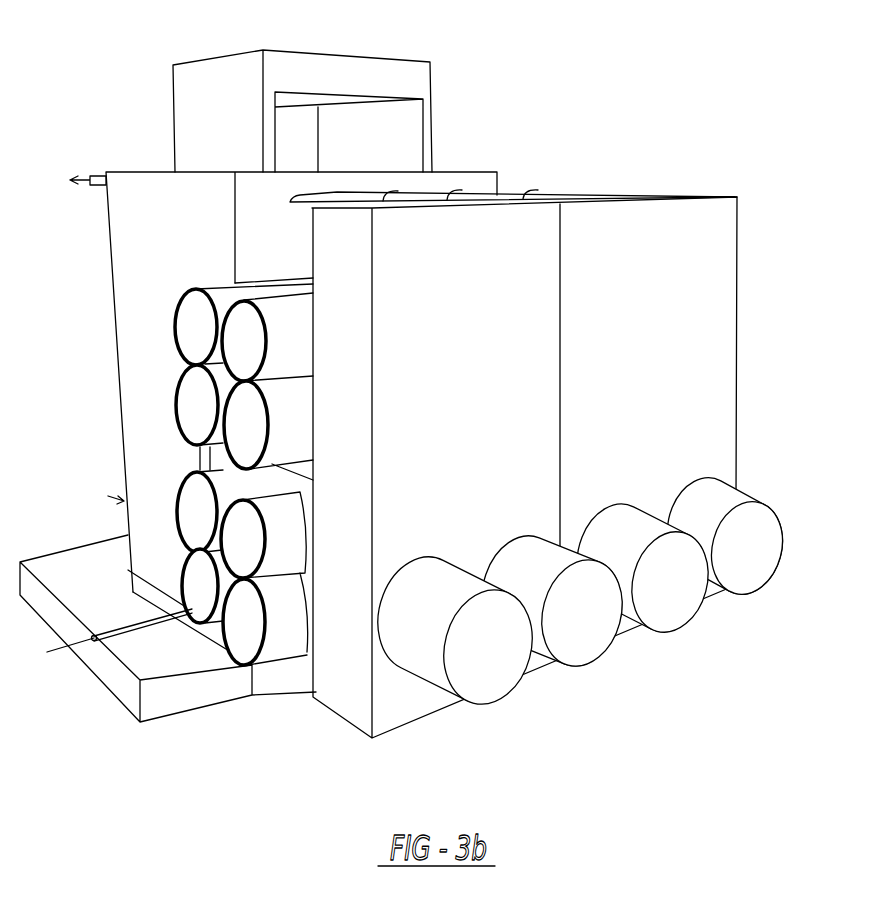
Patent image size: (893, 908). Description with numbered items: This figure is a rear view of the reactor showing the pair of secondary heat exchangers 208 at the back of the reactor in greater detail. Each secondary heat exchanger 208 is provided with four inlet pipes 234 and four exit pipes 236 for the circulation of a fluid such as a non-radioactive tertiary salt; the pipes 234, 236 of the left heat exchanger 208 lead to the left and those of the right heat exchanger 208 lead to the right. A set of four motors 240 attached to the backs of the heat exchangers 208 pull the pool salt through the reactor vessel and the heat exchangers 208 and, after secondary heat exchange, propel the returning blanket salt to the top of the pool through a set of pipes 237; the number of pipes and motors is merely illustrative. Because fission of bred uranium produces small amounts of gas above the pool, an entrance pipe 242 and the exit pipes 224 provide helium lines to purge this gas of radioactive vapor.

The secondary heat exchanger 208 is at (333, 237).
The exit pipes 224 is at (100, 176).
The inlet pipes 234 is at (175, 312).
The exit pipes 236 is at (177, 492).
The pipes 237 is at (313, 198).
The motors 240 is at (493, 703).
The entrance pipe 242 is at (127, 636).